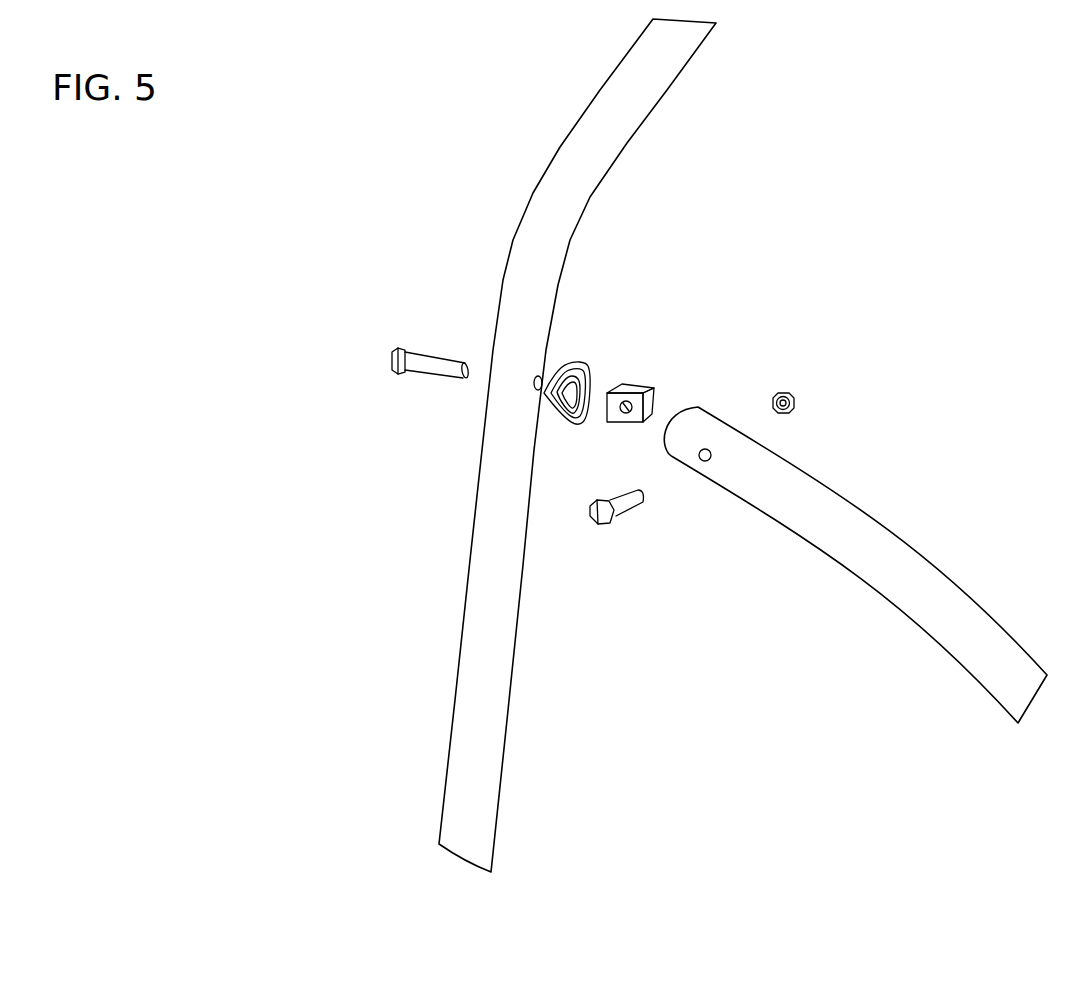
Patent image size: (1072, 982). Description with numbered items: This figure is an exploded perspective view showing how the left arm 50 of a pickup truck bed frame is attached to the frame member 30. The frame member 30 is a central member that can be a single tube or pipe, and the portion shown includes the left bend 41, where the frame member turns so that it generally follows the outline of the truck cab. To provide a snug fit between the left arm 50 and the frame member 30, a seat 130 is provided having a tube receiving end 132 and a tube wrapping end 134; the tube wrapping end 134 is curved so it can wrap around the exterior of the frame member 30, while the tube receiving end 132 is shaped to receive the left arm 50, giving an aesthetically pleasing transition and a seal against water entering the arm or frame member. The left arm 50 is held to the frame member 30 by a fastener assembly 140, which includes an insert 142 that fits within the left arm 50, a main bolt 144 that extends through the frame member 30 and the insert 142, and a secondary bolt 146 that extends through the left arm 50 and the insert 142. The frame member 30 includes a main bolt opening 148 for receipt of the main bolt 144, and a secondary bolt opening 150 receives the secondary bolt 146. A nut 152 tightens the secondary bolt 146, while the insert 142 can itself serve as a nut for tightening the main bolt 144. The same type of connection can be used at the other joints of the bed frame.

The frame member 30 is at (579, 445).
The left bend 41 is at (533, 218).
The left arm 50 is at (947, 598).
The seat 130 is at (599, 364).
The tube receiving end 132 is at (588, 375).
The tube wrapping end 134 is at (599, 341).
The fastener assembly 140 is at (700, 336).
The insert 142 is at (652, 397).
The main bolt 144 is at (437, 363).
The secondary bolt 146 is at (625, 505).
The main bolt opening 148 is at (542, 392).
The secondary bolt opening 150 is at (707, 462).
The nut 152 is at (797, 403).